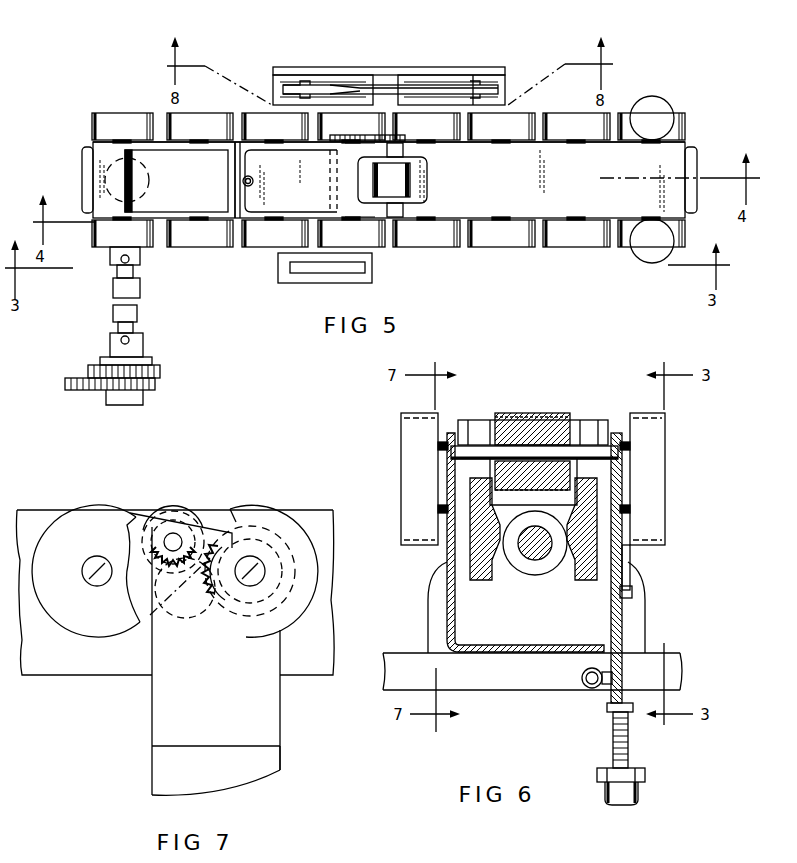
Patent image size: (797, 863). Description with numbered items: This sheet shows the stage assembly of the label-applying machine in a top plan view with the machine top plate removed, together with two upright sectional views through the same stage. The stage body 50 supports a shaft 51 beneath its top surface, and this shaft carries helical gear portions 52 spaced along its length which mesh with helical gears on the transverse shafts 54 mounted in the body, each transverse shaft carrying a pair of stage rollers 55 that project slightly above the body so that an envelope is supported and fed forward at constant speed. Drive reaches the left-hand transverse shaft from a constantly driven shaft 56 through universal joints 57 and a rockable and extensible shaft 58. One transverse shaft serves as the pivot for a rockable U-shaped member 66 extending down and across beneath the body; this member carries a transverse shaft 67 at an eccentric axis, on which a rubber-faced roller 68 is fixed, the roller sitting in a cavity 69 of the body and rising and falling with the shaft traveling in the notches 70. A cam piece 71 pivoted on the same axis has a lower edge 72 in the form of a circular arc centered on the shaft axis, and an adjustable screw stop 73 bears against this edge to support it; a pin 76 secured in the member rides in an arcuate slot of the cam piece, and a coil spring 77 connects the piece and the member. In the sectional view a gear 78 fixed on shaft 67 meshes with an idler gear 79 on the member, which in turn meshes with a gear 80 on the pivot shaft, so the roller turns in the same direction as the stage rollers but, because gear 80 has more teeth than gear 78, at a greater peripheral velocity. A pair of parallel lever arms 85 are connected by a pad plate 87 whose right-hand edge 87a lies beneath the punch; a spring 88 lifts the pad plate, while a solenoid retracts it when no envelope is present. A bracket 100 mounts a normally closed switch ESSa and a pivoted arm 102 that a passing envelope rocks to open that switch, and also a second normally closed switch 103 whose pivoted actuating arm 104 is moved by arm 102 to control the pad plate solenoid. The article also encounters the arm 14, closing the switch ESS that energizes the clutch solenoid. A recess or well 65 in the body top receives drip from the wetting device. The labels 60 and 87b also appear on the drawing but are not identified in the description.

In FIG. 5, the arm 14 is at (372, 268).
In FIG. 7, the stage body 50 is at (50, 667).
In FIG. 6, the stage body 50 is at (473, 530).
In FIG. 6, the shaft 51 is at (527, 560).
In FIG. 7, the helical gear portions 52 is at (250, 571).
In FIG. 6, the helical gear portions 52 is at (553, 562).
In FIG. 5, the transverse shafts 54 is at (145, 262).
In FIG. 7, the transverse shafts 54 is at (97, 587).
In FIG. 5, the stage rollers 55 is at (97, 128).
In FIG. 7, the stage rollers 55 is at (97, 512).
In FIG. 6, the stage rollers 55 is at (405, 423).
In FIG. 5, the constantly driven shaft 56 is at (135, 400).
In FIG. 5, the universal joints 57 is at (145, 342).
In FIG. 5, the rockable and extensible shaft 58 is at (142, 290).
In FIG. 5, the round wheel 60 is at (112, 175).
In FIG. 5, the recess or well 65 is at (176, 181).
In FIG. 7, the rockable U-shaped member 66 is at (160, 728).
In FIG. 6, the rockable U-shaped member 66 is at (452, 595).
In FIG. 7, the transverse shaft 67 is at (182, 538).
In FIG. 6, the transverse shaft 67 is at (515, 452).
In FIG. 5, the rubber-faced roller 68 is at (408, 182).
In FIG. 7, the rubber-faced roller 68 is at (163, 510).
In FIG. 6, the rubber-faced roller 68 is at (548, 415).
In FIG. 5, the cavity 69 is at (420, 165).
In FIG. 7, the notches 70 is at (198, 528).
In FIG. 7, the cam piece 71 is at (160, 778).
In FIG. 6, the cam piece 71 is at (620, 607).
In FIG. 7, the lower edge 72 is at (245, 787).
In FIG. 6, the lower edge 72 is at (627, 700).
In FIG. 6, the adjustable screw stop 73 is at (610, 738).
In FIG. 6, the pin 76 is at (630, 557).
In FIG. 6, the coil spring 77 is at (590, 690).
In FIG. 7, the gear 78 is at (163, 540).
In FIG. 7, the idler gear 79 is at (185, 608).
In FIG. 7, the gear 80 is at (233, 603).
In FIG. 5, the lever arms 85 is at (178, 142).
In FIG. 5, the pad plate 87 is at (291, 181).
In FIG. 5, the right-hand edge 87a is at (340, 190).
In FIG. 5, the compartment wall 87b is at (240, 159).
In FIG. 5, the spring 88 is at (252, 178).
In FIG. 5, the bracket 100 is at (427, 67).
In FIG. 5, the pivoted arm 102 is at (358, 88).
In FIG. 5, the second normally closed switch 103 is at (502, 92).
In FIG. 5, the pivoted actuating arm 104 is at (445, 88).
In FIG. 5, the switch ESS is at (303, 278).
In FIG. 5, the normally closed switch ESSa is at (328, 80).